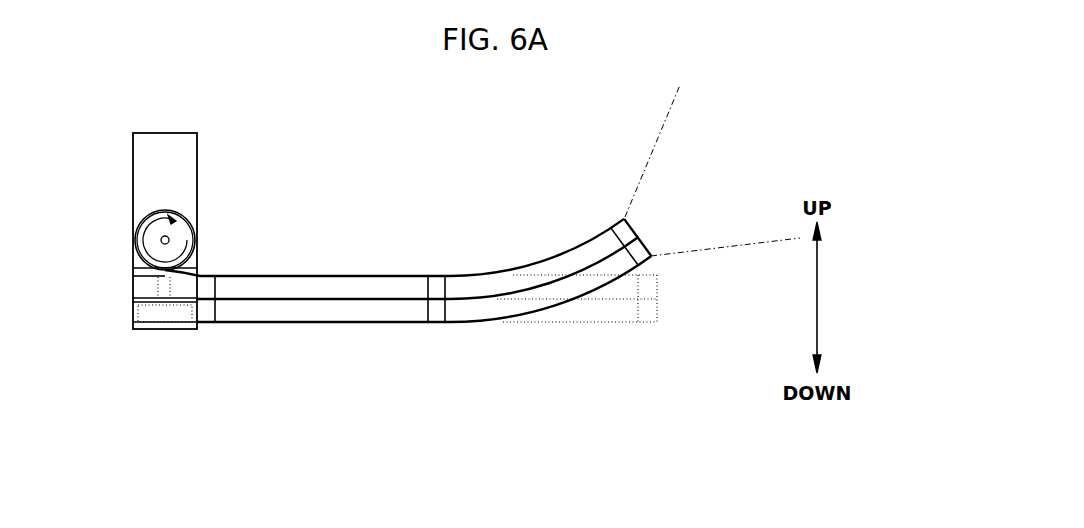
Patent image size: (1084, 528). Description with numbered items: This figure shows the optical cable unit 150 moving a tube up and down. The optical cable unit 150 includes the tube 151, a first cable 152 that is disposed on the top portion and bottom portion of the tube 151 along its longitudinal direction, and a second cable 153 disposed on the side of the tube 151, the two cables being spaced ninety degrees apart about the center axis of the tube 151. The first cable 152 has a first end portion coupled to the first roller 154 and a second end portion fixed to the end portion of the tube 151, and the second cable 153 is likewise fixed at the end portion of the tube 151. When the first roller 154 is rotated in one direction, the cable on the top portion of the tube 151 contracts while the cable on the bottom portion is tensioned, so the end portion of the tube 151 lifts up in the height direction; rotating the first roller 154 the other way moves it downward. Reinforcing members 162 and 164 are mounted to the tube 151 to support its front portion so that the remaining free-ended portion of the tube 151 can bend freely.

The optical cable unit 150 is at (412, 281).
The tube 151 is at (473, 310).
The first cable 152 is at (467, 274).
The second cable 153 is at (495, 299).
The first roller 154 is at (184, 241).
The reinforcing member 162 is at (207, 308).
The reinforcing member 164 is at (437, 312).